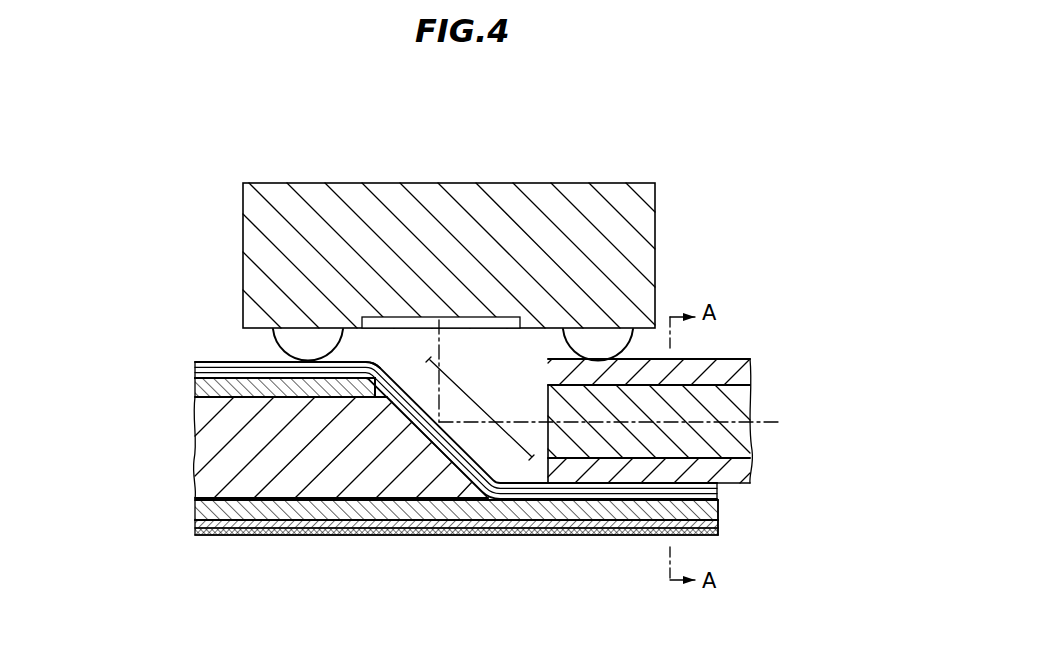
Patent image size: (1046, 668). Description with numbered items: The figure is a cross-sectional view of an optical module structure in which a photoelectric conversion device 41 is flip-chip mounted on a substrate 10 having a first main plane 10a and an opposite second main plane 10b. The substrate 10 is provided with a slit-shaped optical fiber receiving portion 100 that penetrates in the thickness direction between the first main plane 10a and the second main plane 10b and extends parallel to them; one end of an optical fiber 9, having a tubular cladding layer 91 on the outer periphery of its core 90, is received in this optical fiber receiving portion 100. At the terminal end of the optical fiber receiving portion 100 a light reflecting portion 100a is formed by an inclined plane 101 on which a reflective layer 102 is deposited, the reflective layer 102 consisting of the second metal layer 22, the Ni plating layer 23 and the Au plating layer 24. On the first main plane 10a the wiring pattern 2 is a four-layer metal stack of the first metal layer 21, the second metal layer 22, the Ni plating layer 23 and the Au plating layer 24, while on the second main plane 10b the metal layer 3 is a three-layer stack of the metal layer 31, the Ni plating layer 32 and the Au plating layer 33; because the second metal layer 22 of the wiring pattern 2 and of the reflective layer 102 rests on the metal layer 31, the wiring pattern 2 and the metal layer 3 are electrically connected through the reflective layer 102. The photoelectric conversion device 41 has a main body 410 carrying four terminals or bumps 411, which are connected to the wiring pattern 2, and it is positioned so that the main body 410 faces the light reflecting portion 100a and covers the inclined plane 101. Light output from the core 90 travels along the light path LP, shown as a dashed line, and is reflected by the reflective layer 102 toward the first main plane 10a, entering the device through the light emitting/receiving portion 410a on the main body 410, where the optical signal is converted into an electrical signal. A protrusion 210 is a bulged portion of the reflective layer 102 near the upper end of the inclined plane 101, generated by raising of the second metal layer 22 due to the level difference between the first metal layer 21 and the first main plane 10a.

The wiring pattern 2 is at (407, 319).
The metal layer 3 is at (407, 526).
The optical fiber 9 is at (773, 486).
The substrate 10 is at (310, 448).
The first main plane 10a is at (227, 396).
The second main plane 10b is at (235, 500).
The first metal layer 21 is at (195, 389).
The second metal layer 22 is at (195, 376).
The Ni plating layer 23 is at (195, 371).
The Au plating layer 24 is at (195, 363).
The metal layer 31 is at (195, 511).
The Ni plating layer 32 is at (195, 524).
The Au plating layer 33 is at (195, 532).
The photoelectric conversion device 41 is at (461, 234).
The main body 410 is at (648, 260).
The light emitting/receiving portion 410a is at (400, 320).
The terminals (bumps) 411 is at (308, 342).
The core 90 is at (735, 410).
The cladding layer 91 is at (733, 368).
The optical fiber receiving portion 100 is at (625, 303).
The light reflecting portion 100a is at (505, 362).
The inclined plane 101 is at (446, 456).
The reflective layer 102 is at (480, 408).
The protrusion 210 is at (398, 358).
The light path LP is at (768, 422).